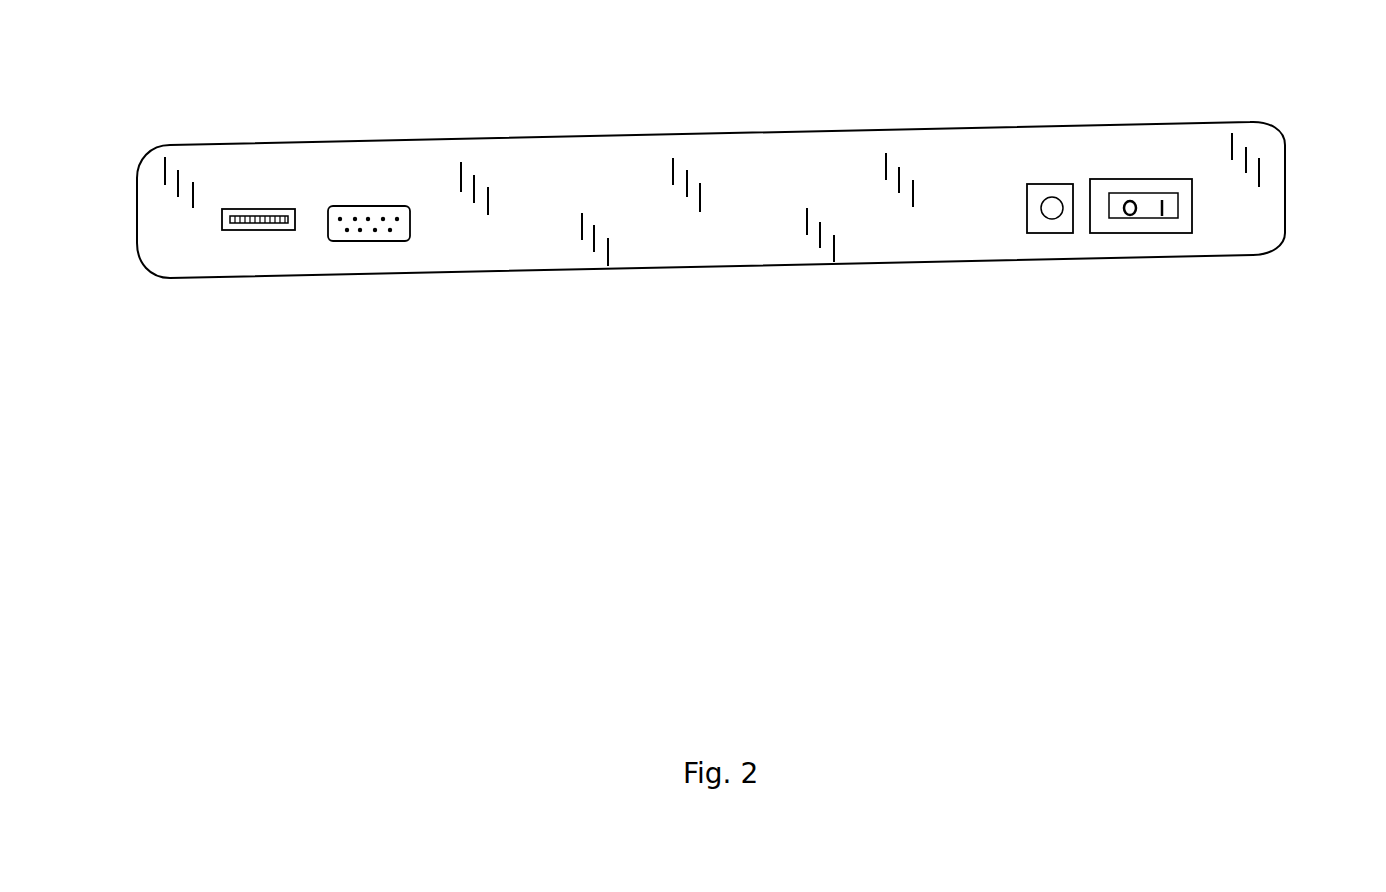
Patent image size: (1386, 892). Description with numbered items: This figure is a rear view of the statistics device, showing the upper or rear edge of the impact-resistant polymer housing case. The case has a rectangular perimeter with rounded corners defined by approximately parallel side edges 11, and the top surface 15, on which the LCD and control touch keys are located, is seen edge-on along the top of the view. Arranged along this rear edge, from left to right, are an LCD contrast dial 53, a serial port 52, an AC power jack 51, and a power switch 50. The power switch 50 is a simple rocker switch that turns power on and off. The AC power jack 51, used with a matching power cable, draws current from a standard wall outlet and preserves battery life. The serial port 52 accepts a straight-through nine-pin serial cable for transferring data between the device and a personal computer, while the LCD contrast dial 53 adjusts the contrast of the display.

The top surface 15 is at (592, 120).
The side edges 11 is at (140, 223).
The LCD contrast dial 53 is at (275, 247).
The RS-232 serial port 52 is at (368, 245).
The AC power jack 51 is at (1060, 242).
The power switch 50 is at (1127, 242).